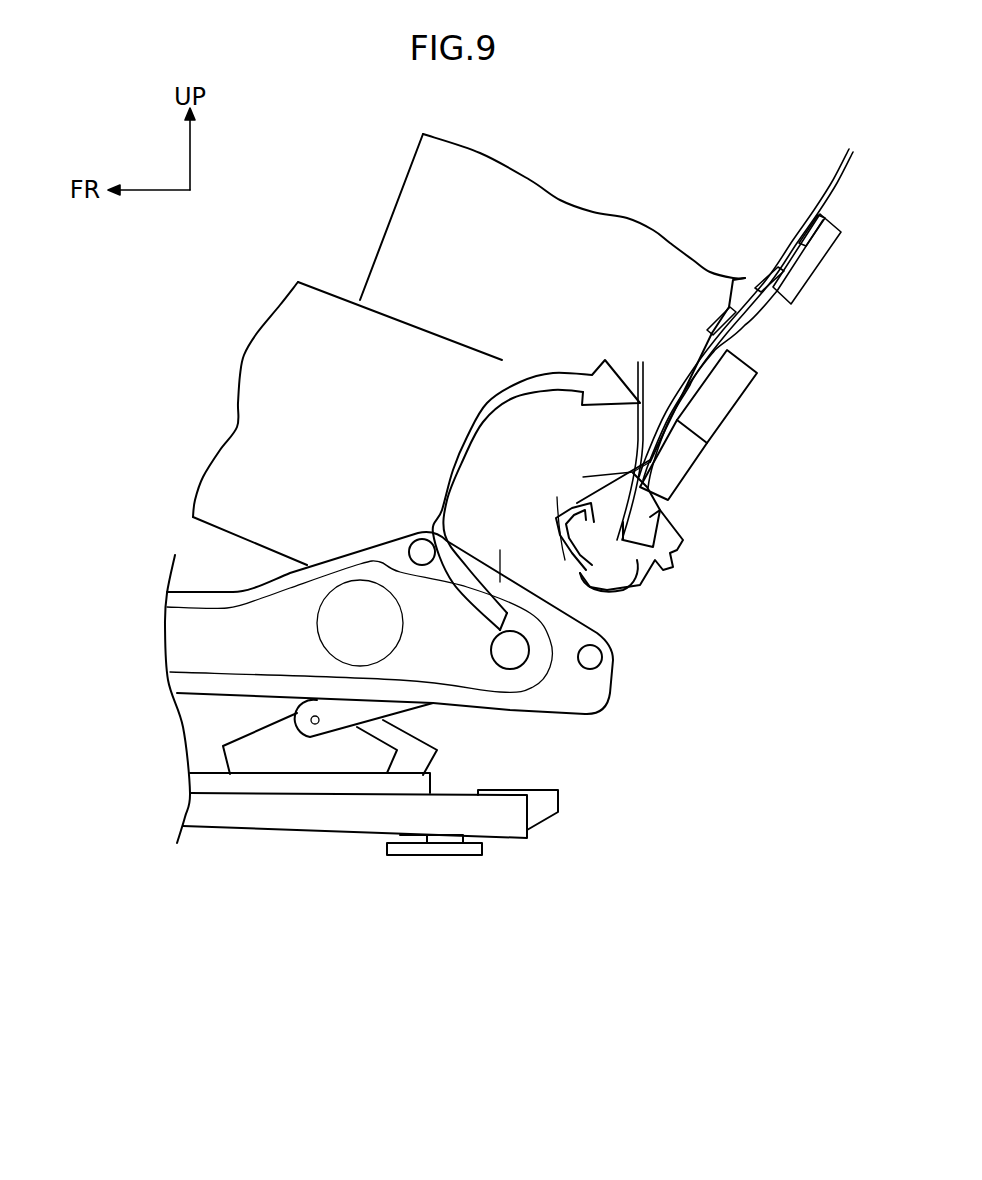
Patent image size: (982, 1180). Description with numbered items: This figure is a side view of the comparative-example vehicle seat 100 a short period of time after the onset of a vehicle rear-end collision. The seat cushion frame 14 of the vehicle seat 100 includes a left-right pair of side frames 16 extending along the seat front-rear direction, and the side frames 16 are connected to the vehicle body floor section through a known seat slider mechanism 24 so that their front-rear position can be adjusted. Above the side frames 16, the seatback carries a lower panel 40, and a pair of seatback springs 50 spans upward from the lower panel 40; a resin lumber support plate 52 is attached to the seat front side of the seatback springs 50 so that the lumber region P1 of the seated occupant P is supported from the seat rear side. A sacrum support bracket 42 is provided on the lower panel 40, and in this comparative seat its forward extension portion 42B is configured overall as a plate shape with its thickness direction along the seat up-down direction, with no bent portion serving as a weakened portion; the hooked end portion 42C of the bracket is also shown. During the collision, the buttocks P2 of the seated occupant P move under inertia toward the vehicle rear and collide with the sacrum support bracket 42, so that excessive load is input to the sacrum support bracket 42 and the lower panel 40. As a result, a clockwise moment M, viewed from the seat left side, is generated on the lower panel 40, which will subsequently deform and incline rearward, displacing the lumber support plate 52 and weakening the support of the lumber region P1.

The seat cushion frame 14 is at (348, 550).
The side frame 16 is at (190, 637).
The seat slider mechanism 24 is at (593, 800).
The lower panel 40 is at (727, 377).
The sacrum support bracket 42 is at (598, 535).
The forward extension portion 42B is at (593, 552).
The hook portion 42C is at (571, 503).
The seatback spring 50 is at (753, 317).
The lumber support plate 52 is at (807, 227).
The vehicle seat 100 is at (313, 893).
The seated occupant P is at (379, 193).
The lumber region P1 is at (650, 285).
The buttocks P2 is at (500, 550).
The clockwise moment M is at (557, 373).